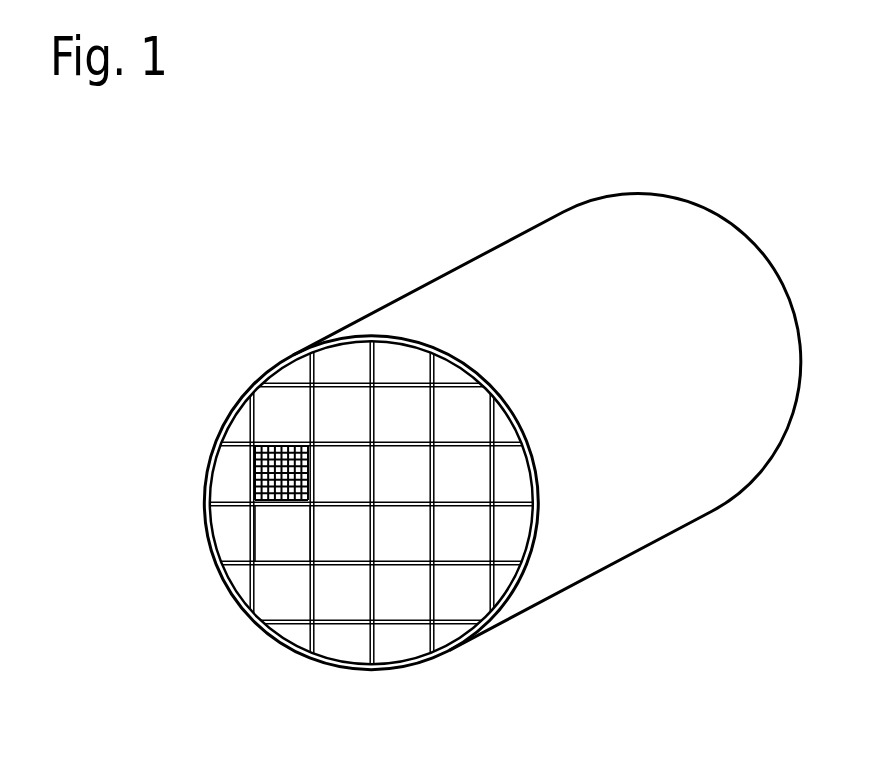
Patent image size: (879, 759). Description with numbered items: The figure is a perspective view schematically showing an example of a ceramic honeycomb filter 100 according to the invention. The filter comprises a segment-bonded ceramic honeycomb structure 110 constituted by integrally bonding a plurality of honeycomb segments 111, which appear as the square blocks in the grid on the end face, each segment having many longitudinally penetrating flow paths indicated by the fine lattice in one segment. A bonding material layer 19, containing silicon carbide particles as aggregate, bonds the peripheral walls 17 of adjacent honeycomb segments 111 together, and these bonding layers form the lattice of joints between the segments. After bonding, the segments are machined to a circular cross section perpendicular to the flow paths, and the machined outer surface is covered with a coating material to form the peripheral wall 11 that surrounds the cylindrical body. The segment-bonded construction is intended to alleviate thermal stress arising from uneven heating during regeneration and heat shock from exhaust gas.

The ceramic honeycomb filter 100 is at (356, 256).
The ceramic honeycomb structure 110 is at (245, 398).
The peripheral wall 11 is at (222, 432).
The bonding material layer 19 is at (300, 563).
The peripheral walls of the honeycomb segments 17 is at (301, 444).
The honeycomb segment 111 is at (262, 540).